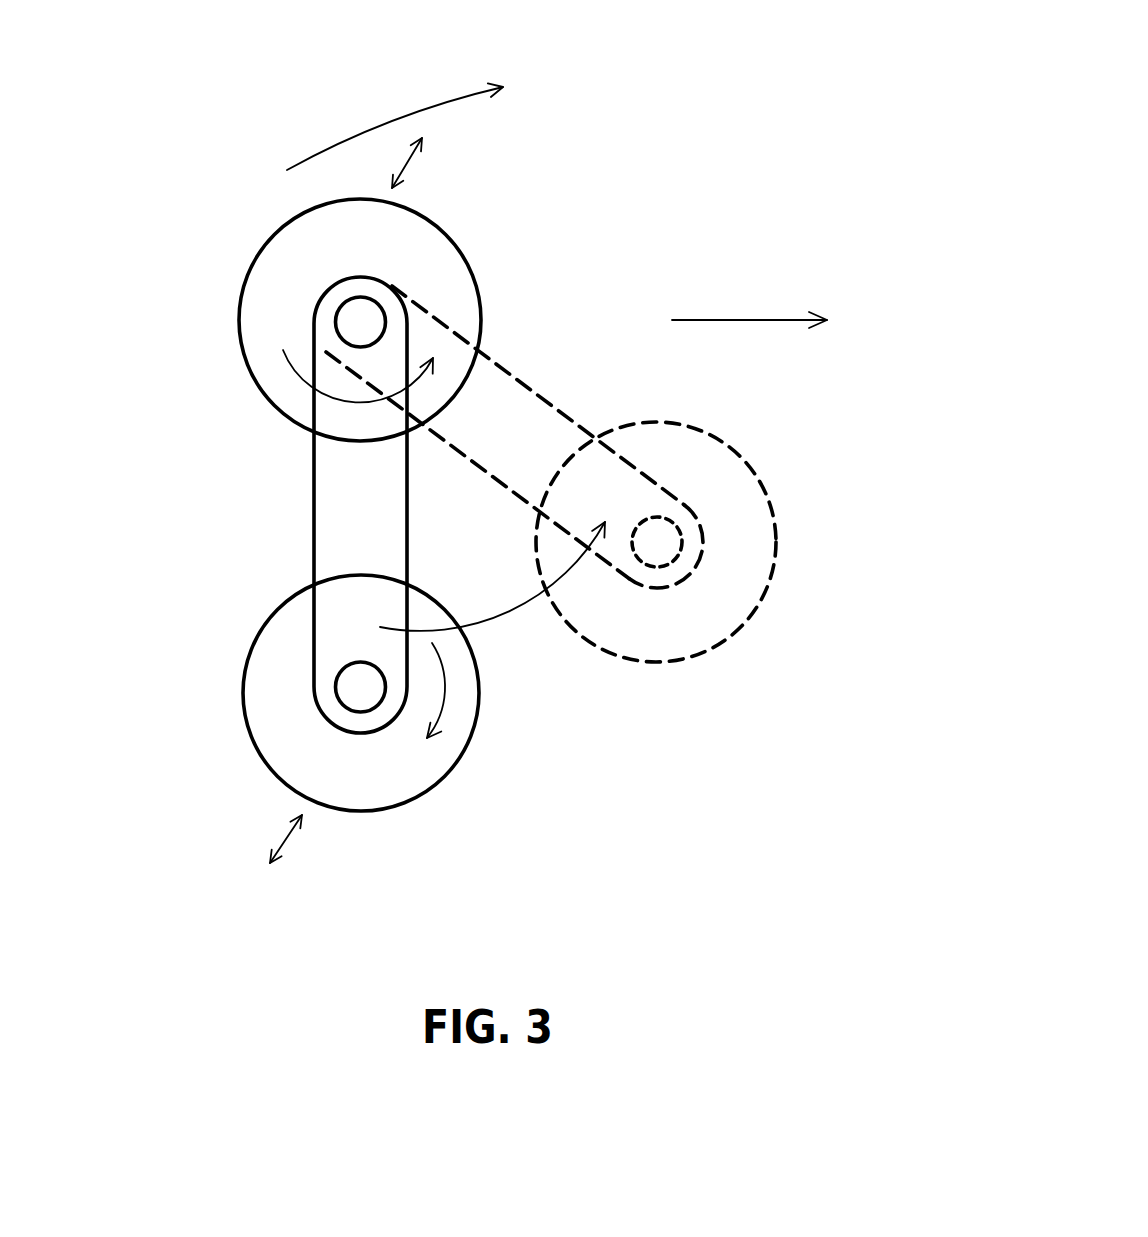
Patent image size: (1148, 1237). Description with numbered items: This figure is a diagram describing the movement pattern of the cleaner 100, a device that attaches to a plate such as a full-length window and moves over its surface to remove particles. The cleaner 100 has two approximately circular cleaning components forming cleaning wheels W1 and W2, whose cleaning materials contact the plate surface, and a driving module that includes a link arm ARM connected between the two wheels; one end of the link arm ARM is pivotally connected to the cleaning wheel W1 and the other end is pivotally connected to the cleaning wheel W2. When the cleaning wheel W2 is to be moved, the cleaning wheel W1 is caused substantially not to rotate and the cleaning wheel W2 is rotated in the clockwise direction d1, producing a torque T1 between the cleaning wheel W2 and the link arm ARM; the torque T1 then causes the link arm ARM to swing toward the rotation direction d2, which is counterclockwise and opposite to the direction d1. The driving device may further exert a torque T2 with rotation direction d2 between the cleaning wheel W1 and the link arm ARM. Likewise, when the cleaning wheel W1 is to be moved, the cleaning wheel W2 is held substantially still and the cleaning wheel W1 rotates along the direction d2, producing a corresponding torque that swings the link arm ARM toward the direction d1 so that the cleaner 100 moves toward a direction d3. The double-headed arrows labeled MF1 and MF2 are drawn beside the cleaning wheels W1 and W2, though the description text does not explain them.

The cleaner 100 is at (778, 53).
The link arm ARM is at (345, 535).
The cleaning wheel W1 is at (260, 313).
The cleaning wheel W2 is at (275, 661).
The torque T1 is at (508, 612).
The torque T2 is at (353, 402).
The clockwise direction d1 is at (420, 425).
The rotation direction d2 is at (551, 474).
The direction d3 is at (776, 321).
The first magnetic force MF1 is at (433, 167).
The second magnetic force MF2 is at (315, 844).